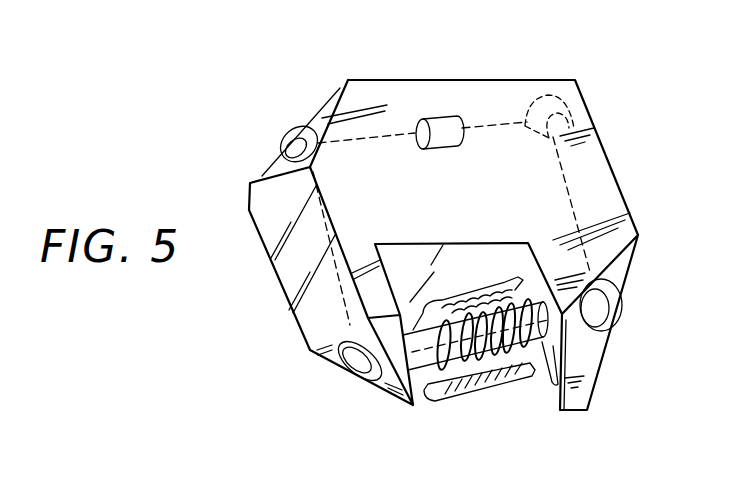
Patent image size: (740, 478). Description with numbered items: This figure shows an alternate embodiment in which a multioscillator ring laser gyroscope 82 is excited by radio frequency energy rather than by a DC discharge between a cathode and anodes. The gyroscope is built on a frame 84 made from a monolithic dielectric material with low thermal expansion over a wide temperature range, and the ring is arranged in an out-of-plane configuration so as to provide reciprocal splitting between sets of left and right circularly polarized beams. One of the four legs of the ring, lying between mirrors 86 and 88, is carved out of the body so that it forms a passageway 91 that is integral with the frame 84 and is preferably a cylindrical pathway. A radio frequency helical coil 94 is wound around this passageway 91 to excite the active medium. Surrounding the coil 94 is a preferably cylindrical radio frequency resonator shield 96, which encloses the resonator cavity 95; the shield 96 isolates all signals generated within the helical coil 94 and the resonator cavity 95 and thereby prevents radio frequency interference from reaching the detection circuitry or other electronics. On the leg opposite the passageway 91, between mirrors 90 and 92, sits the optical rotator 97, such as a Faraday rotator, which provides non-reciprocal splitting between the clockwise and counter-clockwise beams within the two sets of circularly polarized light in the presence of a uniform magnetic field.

The multioscillator ring laser gyroscope 82 is at (613, 155).
The frame 84 is at (292, 275).
The mirror 86 is at (355, 368).
The mirror 88 is at (612, 310).
The mirror 90 is at (293, 138).
The passageway 91 is at (543, 388).
The mirror 92 is at (552, 103).
The radio frequency helical coil 94 is at (425, 403).
The resonator cavity 95 is at (490, 380).
The radio frequency resonator shield 96 is at (507, 385).
The optical rotator 97 is at (440, 118).